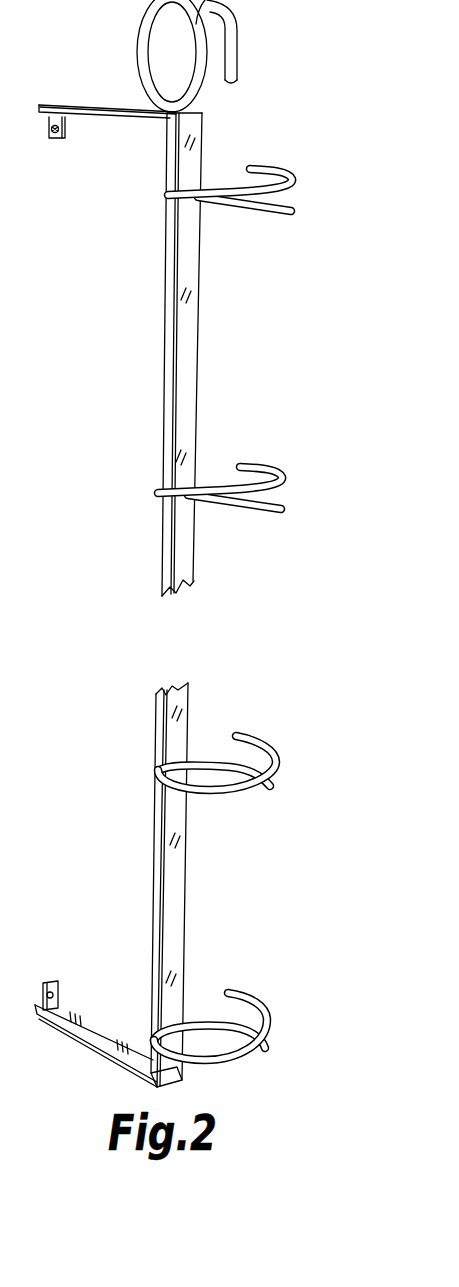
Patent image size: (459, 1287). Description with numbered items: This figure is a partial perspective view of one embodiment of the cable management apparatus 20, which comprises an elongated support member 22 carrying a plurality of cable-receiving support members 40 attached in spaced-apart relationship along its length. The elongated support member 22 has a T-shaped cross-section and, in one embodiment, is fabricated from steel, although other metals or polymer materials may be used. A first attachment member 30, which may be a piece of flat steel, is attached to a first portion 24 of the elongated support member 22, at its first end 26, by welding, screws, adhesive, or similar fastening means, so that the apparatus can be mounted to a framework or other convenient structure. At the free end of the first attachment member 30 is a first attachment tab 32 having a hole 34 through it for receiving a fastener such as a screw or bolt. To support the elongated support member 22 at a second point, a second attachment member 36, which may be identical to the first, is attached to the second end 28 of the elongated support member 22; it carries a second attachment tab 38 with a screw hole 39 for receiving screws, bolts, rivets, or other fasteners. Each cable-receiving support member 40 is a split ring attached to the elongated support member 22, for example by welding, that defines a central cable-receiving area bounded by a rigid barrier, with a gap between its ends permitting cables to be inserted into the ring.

The cable management apparatus 20 is at (117, 885).
The elongated support member 22 is at (151, 857).
The first portion of the elongated support member 24 is at (212, 125).
The first end of the elongated support member 26 is at (167, 118).
The second end of the elongated support member 28 is at (170, 1083).
The first attachment member 30 is at (93, 105).
The first attachment tab 32 is at (62, 119).
The hole 34 is at (50, 134).
The second attachment member 36 is at (68, 1029).
The second attachment tab 38 is at (59, 1003).
The screw hole 39 is at (54, 981).
The cable-receiving support member 40 is at (302, 177).